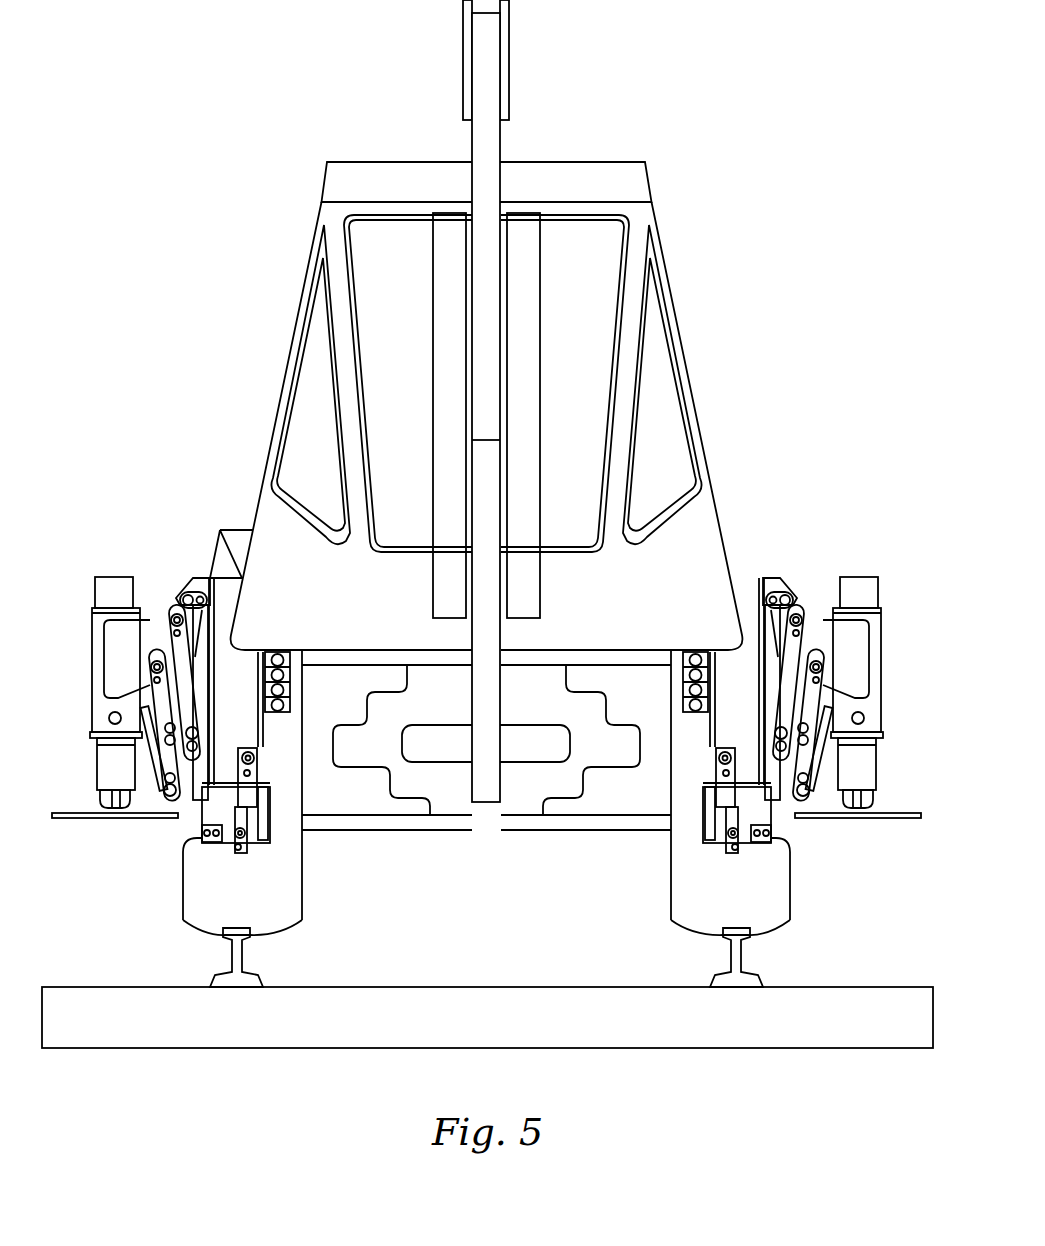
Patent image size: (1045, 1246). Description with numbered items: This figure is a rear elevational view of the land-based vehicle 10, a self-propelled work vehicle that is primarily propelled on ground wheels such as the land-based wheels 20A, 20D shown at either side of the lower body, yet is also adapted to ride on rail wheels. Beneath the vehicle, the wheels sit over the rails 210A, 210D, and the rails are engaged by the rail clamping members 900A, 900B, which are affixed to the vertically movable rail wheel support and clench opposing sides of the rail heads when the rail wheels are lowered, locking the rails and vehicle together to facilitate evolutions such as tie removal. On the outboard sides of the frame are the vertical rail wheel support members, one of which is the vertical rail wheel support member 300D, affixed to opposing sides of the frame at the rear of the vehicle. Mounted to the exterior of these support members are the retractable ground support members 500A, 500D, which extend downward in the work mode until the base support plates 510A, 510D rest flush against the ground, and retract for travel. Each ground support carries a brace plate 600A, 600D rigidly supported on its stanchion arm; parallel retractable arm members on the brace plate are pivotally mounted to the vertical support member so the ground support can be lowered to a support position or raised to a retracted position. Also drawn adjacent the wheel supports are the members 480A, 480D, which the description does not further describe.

The land-based vehicle 10 is at (663, 385).
The land-based wheel 20D is at (287, 855).
The land-based wheel 20A is at (690, 863).
The rail 210D is at (228, 967).
The rail 210A is at (750, 967).
The vertical rail wheel support member 300D is at (232, 576).
The hydraulic cylinder 480D is at (240, 837).
The hydraulic cylinder 480A is at (733, 847).
The retractable ground support member 500D is at (100, 770).
The retractable ground support member 500A is at (860, 770).
The base support plate 510D is at (113, 807).
The base support plate 510A is at (857, 807).
The brace plate 600D is at (150, 625).
The brace plate 600A is at (819, 625).
The rail clamping member 900B is at (183, 900).
The rail clamping member 900A is at (762, 836).